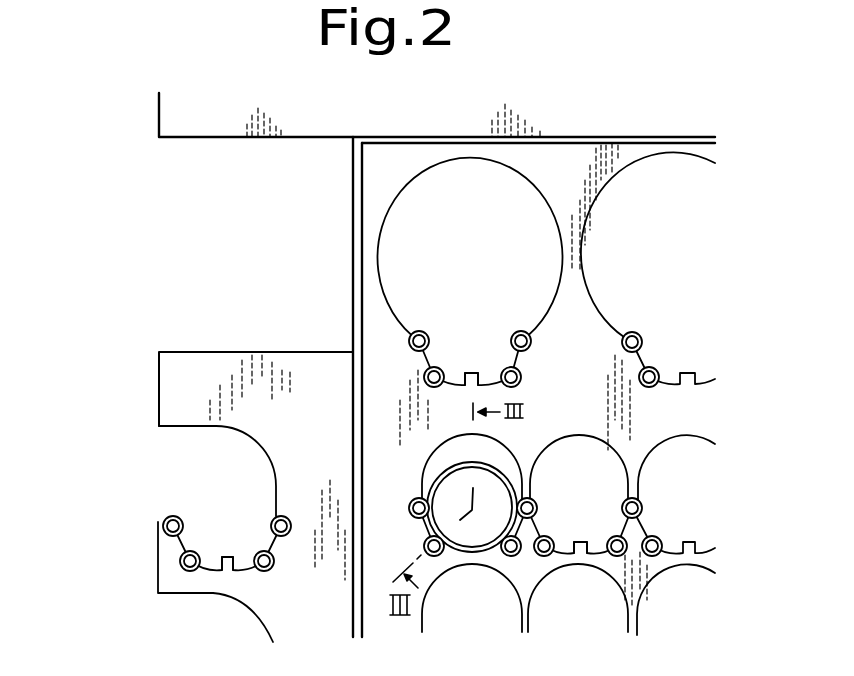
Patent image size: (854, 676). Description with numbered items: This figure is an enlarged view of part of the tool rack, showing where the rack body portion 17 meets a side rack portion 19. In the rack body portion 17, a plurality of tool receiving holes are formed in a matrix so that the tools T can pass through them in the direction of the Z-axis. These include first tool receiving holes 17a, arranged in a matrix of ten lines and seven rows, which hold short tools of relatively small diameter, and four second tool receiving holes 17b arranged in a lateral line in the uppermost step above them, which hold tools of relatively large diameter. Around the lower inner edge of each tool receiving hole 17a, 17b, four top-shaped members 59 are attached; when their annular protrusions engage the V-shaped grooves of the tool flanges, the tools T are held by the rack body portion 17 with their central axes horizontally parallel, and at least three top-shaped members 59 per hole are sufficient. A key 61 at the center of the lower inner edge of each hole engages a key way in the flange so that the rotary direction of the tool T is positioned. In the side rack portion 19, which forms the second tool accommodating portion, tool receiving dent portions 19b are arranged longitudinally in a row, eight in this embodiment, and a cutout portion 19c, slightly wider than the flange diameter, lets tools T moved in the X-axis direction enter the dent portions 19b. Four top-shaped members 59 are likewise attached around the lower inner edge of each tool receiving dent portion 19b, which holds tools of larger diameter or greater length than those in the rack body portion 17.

The rack body portion 17 is at (570, 163).
The first tool receiving hole 17a is at (448, 447).
The second tool receiving hole 17b is at (418, 185).
The side rack portion 19 is at (190, 362).
The tool receiving dent portion 19b is at (227, 521).
The cutout portion 19c is at (163, 428).
The top-shaped member 59 is at (409, 336).
The key 61 is at (473, 370).
The tool T is at (432, 478).